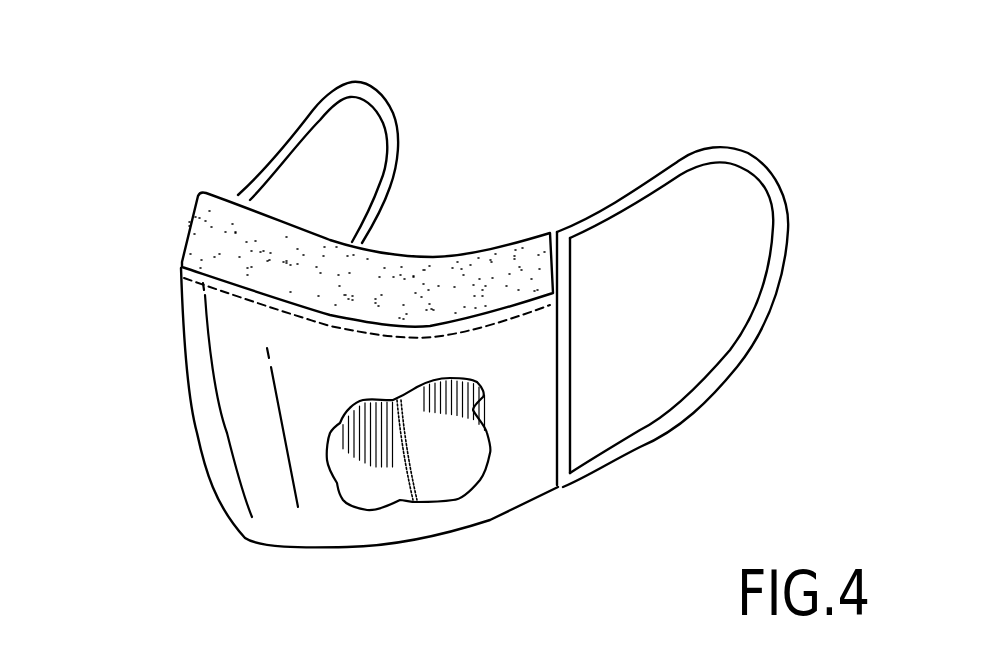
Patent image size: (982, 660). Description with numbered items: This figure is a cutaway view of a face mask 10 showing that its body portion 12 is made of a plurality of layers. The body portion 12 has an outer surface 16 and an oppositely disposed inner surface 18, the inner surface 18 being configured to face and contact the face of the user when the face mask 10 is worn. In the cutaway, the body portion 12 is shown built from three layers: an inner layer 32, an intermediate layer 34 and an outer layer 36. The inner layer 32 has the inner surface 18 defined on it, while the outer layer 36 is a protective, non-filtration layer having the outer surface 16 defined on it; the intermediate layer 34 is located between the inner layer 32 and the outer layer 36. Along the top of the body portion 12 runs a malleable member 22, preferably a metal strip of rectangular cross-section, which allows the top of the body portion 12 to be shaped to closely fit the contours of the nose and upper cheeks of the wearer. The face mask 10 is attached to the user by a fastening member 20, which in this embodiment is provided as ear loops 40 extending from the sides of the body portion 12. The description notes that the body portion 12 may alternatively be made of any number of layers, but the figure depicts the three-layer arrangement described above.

The face mask 10 is at (162, 127).
The body portion 12 is at (247, 477).
The outer surface 16 is at (165, 384).
The inner surface 18 is at (485, 337).
The fastening member 20 is at (739, 128).
The malleable member 22 is at (237, 240).
The inner layer 32 is at (357, 447).
The intermediate layer 34 is at (447, 417).
The outer layer 36 is at (527, 423).
The ear loops 40 is at (381, 97).